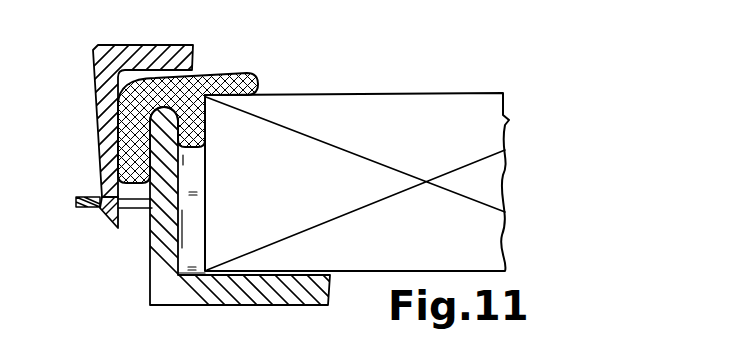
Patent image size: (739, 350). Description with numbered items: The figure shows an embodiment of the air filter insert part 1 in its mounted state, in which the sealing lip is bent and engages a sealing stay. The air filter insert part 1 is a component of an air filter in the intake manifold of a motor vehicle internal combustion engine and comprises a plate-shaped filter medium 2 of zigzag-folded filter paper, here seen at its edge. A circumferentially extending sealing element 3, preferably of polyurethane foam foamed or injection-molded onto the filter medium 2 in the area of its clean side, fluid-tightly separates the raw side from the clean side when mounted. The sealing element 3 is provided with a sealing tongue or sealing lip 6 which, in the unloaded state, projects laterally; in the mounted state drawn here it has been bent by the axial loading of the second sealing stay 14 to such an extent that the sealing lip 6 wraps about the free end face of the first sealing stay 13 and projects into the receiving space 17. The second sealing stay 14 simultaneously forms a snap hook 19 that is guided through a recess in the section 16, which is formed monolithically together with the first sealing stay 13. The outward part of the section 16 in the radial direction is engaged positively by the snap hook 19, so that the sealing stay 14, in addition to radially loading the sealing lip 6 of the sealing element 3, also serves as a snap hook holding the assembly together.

The air filter insert part 1 is at (542, 137).
The filter medium 2 is at (398, 117).
The sealing element 3 is at (225, 76).
The sealing lip 6 is at (120, 130).
The first sealing stay 13 is at (160, 177).
The second sealing stay 14 is at (108, 143).
The section 16 is at (81, 208).
The receiving space 17 is at (127, 197).
The snap hook 19 is at (106, 219).